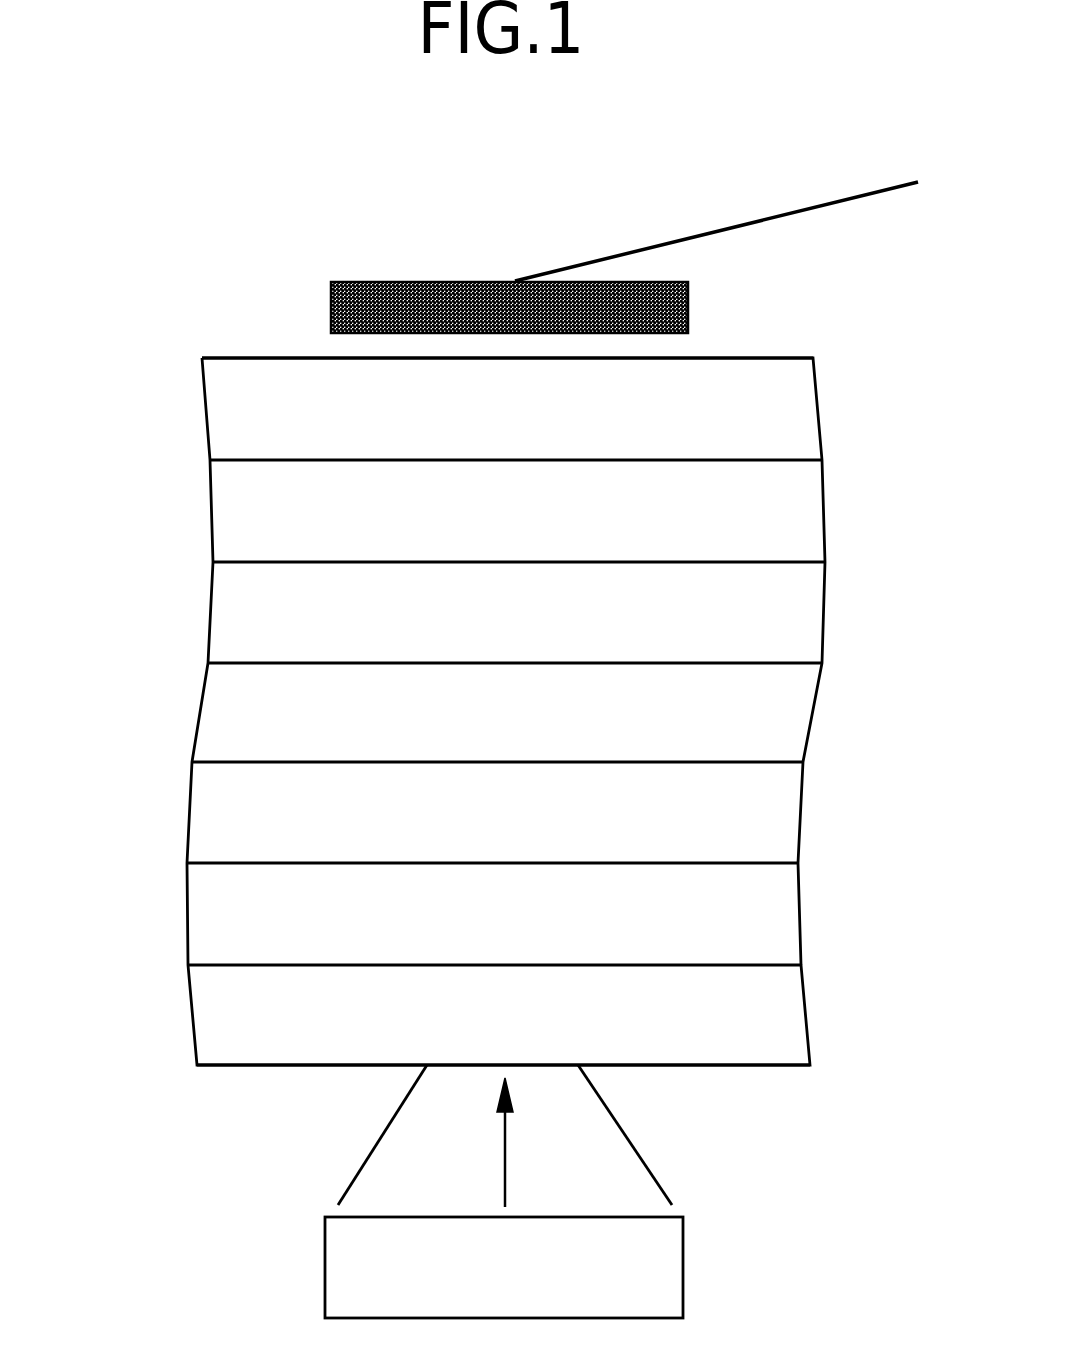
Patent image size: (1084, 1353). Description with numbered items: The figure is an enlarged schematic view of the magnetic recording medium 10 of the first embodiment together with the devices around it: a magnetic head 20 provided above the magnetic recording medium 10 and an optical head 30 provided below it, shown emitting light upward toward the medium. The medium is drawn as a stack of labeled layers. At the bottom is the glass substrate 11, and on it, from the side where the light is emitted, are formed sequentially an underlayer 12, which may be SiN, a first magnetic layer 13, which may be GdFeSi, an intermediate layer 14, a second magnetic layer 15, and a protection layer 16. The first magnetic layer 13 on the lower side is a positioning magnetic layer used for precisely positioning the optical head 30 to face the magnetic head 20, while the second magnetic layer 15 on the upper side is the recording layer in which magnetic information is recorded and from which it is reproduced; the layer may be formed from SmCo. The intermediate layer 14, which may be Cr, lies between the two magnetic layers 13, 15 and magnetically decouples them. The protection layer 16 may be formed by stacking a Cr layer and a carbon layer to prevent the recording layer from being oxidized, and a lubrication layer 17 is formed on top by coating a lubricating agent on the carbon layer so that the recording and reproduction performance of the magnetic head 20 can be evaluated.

The magnetic recording medium 10 is at (176, 375).
The glass substrate 11 is at (790, 1024).
The underlayer 12 is at (790, 920).
The first magnetic layer 13 is at (790, 822).
The intermediate layer 14 is at (802, 720).
The second magnetic layer 15 is at (816, 618).
The protection layer 16 is at (816, 518).
The lubrication layer 17 is at (805, 415).
The magnetic head 20 is at (357, 278).
The optical head 30 is at (683, 1270).